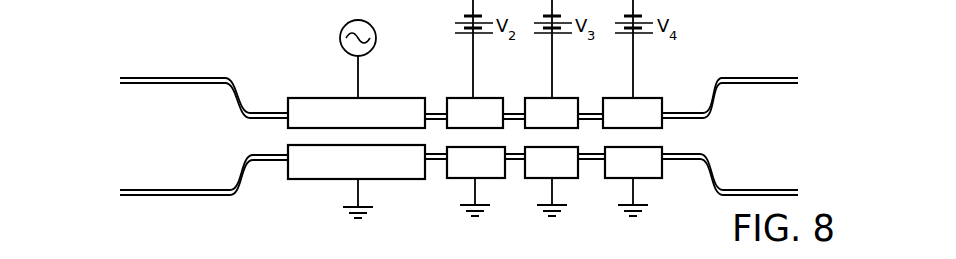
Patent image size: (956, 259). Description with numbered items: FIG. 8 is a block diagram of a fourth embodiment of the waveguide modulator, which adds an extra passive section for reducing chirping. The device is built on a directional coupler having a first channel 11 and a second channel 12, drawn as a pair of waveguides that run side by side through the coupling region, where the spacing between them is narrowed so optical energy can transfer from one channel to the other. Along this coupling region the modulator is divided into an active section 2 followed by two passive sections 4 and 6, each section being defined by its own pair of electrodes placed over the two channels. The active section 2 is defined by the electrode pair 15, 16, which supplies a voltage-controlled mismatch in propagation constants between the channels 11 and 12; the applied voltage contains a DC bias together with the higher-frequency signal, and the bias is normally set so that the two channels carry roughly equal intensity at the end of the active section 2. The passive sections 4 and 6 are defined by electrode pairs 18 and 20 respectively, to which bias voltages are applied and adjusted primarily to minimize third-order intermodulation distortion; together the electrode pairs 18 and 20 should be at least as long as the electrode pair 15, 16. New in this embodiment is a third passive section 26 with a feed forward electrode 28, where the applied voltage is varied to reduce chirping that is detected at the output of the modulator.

The active section 2 is at (303, 96).
The passive section 4 is at (462, 97).
The passive section 6 is at (563, 97).
The first channel 11 is at (187, 198).
The second channel 12 is at (175, 68).
The electrode 15 is at (392, 97).
The electrode 16 is at (298, 180).
The electrode pair 18 is at (462, 162).
The electrode pair 20 is at (572, 167).
The third passive section 26 is at (652, 98).
The feed forward electrode 28 is at (653, 158).